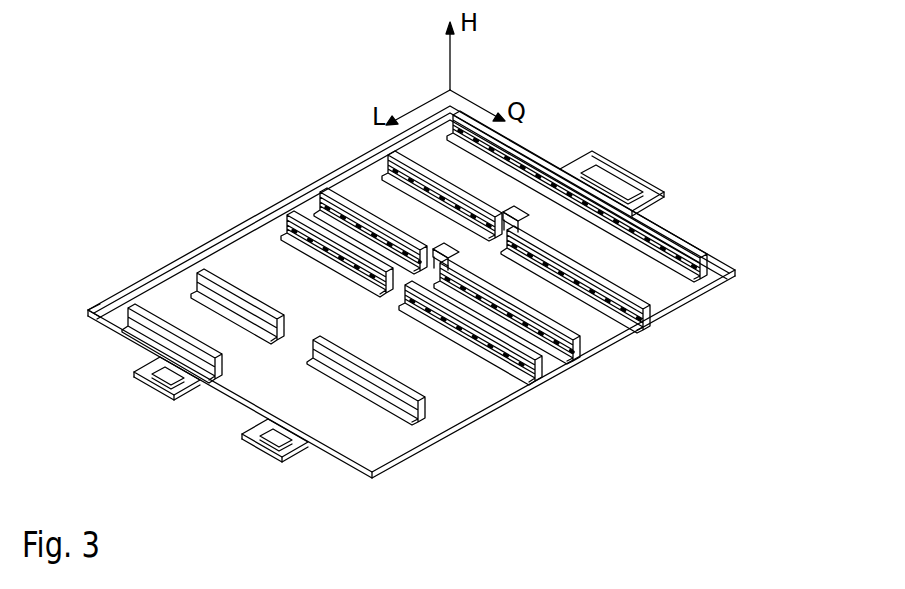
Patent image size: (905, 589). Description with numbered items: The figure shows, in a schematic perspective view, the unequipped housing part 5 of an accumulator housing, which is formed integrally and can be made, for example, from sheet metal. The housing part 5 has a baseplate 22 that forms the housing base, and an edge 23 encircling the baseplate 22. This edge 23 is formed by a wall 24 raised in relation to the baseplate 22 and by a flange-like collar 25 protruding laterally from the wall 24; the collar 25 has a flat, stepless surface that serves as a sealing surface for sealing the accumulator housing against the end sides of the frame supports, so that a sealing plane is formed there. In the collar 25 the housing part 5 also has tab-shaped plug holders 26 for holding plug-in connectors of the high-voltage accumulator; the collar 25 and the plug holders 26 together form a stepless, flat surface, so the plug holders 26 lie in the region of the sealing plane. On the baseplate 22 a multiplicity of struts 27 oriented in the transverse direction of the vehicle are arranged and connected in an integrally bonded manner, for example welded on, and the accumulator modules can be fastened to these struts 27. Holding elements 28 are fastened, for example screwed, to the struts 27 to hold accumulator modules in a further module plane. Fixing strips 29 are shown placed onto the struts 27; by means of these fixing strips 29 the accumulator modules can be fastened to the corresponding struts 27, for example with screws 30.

The housing part 5 is at (128, 246).
The baseplate 22 is at (258, 253).
The edge 23 is at (298, 176).
The wall 24 is at (208, 255).
The collar 25 is at (91, 318).
The plug holder 26 is at (625, 168).
The strut 27 is at (423, 410).
The holding element 28 is at (460, 244).
The fixing strip 29 is at (543, 365).
The screw 30 is at (630, 283).